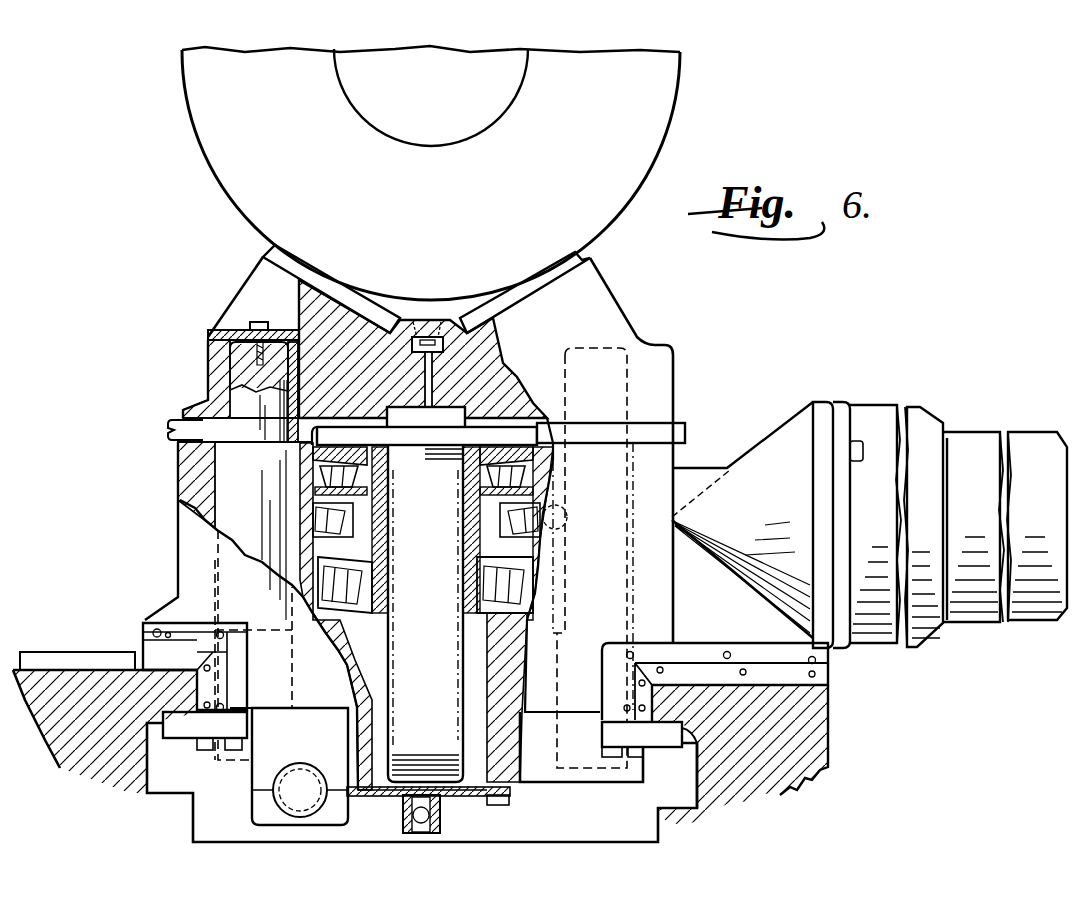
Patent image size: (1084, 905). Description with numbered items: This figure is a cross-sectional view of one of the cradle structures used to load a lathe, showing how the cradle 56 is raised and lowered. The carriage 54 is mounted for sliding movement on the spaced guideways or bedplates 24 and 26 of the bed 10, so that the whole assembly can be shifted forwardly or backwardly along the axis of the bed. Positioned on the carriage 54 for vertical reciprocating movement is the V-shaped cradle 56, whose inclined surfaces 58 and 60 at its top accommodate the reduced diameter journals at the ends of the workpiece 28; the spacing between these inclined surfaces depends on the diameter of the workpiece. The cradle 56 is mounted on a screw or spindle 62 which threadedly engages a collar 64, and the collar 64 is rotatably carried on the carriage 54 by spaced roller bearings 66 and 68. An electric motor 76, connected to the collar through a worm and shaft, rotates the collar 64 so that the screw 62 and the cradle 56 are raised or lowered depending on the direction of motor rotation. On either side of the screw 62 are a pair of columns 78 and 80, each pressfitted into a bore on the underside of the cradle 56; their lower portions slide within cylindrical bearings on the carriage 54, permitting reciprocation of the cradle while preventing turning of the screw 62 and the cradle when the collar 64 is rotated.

The bed 10 is at (797, 790).
The guideway 24 is at (172, 622).
The guideway 26 is at (743, 643).
The workpiece 28 is at (657, 108).
The carriage 54 is at (562, 783).
The cradle 56 is at (675, 355).
The inclined surface 58 is at (335, 290).
The inclined surface 60 is at (526, 291).
The screw 62 is at (447, 683).
The collar 64 is at (523, 507).
The roller bearing 66 is at (520, 587).
The roller bearing 68 is at (522, 470).
The electric motor 76 is at (1023, 440).
The column 78 is at (230, 487).
The column 80 is at (617, 577).